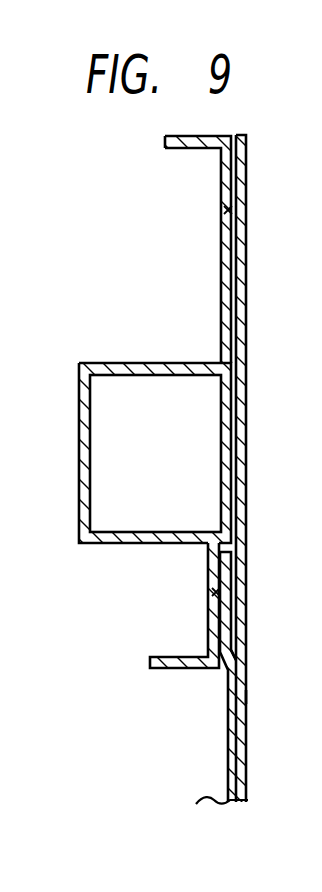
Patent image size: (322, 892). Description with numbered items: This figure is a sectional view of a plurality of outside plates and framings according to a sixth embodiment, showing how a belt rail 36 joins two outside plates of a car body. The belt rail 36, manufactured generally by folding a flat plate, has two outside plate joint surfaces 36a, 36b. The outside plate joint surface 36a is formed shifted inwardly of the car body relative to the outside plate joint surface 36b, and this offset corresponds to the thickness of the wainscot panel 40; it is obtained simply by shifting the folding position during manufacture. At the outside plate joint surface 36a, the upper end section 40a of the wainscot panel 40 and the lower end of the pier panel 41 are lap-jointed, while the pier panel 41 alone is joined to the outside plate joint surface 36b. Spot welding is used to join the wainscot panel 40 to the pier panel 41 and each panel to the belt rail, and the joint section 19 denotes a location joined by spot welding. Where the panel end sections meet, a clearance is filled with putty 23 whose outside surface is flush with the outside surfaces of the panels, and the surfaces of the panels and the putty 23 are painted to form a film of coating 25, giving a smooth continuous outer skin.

The joint section 19 is at (224, 211).
The fill putty 23 is at (240, 653).
The film of coating 25 is at (246, 697).
The belt rail 36 is at (79, 404).
The outside plate joint surface 36a is at (208, 626).
The outside plate joint surface 36b is at (221, 291).
The wainscot panel 40 is at (236, 748).
The upper end section of wainscot panel 40a is at (225, 607).
The pier panel 41 is at (246, 381).